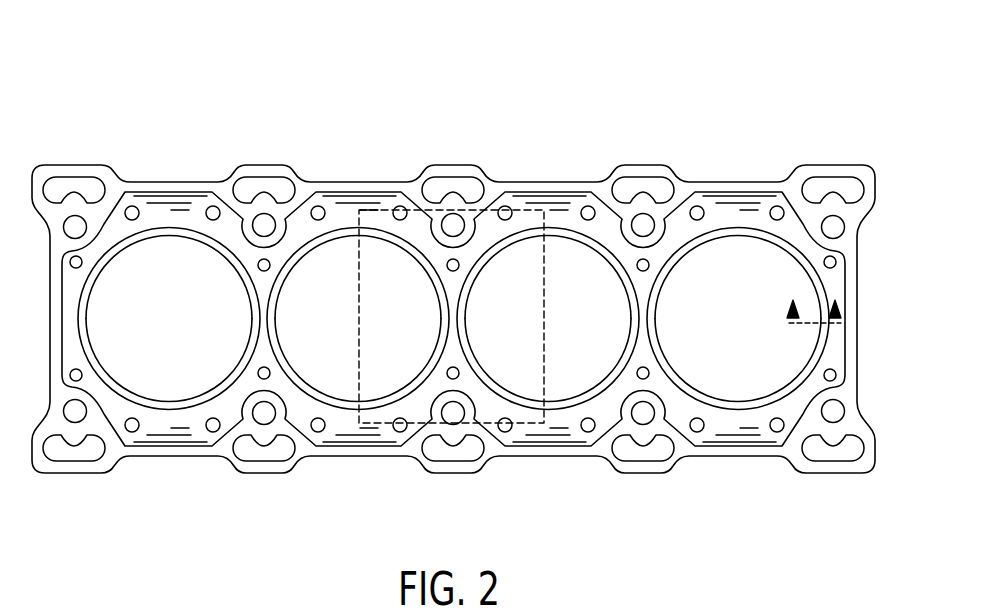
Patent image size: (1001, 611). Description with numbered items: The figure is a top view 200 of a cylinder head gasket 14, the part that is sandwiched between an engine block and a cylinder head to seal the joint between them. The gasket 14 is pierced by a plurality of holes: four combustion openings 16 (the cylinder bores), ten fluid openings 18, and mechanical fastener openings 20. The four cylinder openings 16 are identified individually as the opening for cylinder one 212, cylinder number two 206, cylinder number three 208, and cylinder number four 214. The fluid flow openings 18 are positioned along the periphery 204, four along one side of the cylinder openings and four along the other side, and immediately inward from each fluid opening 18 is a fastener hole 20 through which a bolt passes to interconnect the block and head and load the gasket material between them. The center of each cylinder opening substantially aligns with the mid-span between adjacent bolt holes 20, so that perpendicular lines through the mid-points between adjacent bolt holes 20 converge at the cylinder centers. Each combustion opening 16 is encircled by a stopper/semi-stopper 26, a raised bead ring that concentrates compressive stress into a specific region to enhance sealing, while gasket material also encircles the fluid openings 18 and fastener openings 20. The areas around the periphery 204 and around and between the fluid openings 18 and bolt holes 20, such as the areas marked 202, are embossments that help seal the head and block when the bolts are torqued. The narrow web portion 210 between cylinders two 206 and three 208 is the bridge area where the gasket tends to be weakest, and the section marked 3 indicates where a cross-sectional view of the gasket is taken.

The top view 200 is at (680, 108).
The cylinder head gasket 14 is at (858, 242).
The combustion openings 16 is at (160, 332).
The fluid openings 18 is at (58, 186).
The mechanical fastener openings 20 is at (63, 229).
The stoppers/semi-stoppers 26 is at (203, 233).
The embossment areas 202 is at (63, 208).
The periphery 204 is at (520, 190).
The cylinder number two opening 206 is at (350, 380).
The cylinder number three opening 208 is at (527, 380).
The web portion 210 is at (546, 357).
The cylinder one opening 212 is at (183, 380).
The cylinder number four opening 214 is at (745, 380).
The section line 3- 3 is at (814, 295).